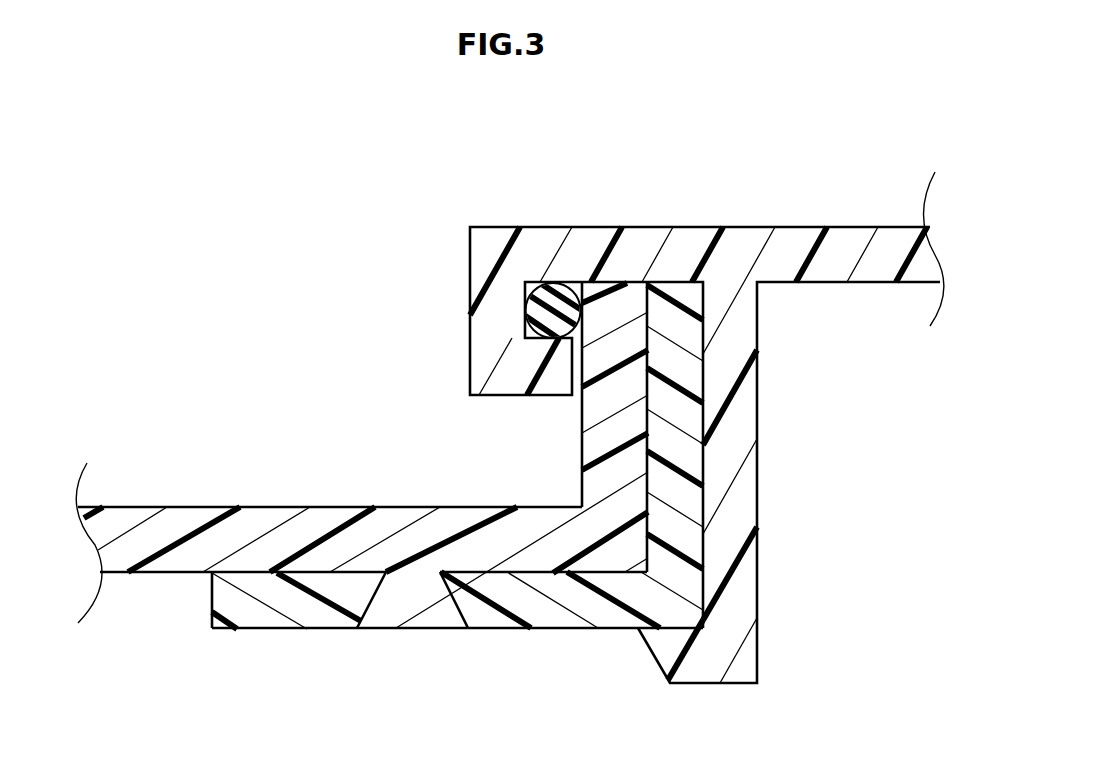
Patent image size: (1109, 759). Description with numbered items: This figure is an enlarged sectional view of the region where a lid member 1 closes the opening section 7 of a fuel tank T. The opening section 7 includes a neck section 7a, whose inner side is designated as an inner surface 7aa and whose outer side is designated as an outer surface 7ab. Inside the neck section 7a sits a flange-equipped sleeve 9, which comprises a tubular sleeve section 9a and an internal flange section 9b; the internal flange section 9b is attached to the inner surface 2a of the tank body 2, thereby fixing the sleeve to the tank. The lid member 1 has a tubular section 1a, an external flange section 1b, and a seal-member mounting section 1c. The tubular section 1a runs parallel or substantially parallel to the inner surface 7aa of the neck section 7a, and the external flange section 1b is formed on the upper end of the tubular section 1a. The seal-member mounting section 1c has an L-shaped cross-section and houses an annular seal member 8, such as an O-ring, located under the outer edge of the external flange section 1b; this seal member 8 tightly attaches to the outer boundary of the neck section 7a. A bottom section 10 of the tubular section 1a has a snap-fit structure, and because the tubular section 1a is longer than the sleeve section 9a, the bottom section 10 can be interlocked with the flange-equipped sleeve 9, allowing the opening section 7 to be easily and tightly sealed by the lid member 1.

The lid member 1 is at (701, 222).
The tubular section 1a is at (742, 406).
The external flange section 1b is at (540, 252).
The seal-member mounting section 1c is at (488, 356).
The tank body 2 is at (150, 505).
The inner surface of the tank body 2a is at (330, 583).
The opening section 7 is at (526, 473).
The neck section 7a is at (580, 453).
The inner surface 7aa is at (648, 487).
The outer surface 7ab is at (580, 415).
The seal member 8 is at (529, 327).
The flange-equipped sleeve 9 is at (557, 636).
The sleeve section 9a is at (673, 453).
The internal flange section 9b is at (283, 600).
The bottom section 10 is at (707, 657).
The fuel tank T is at (815, 137).